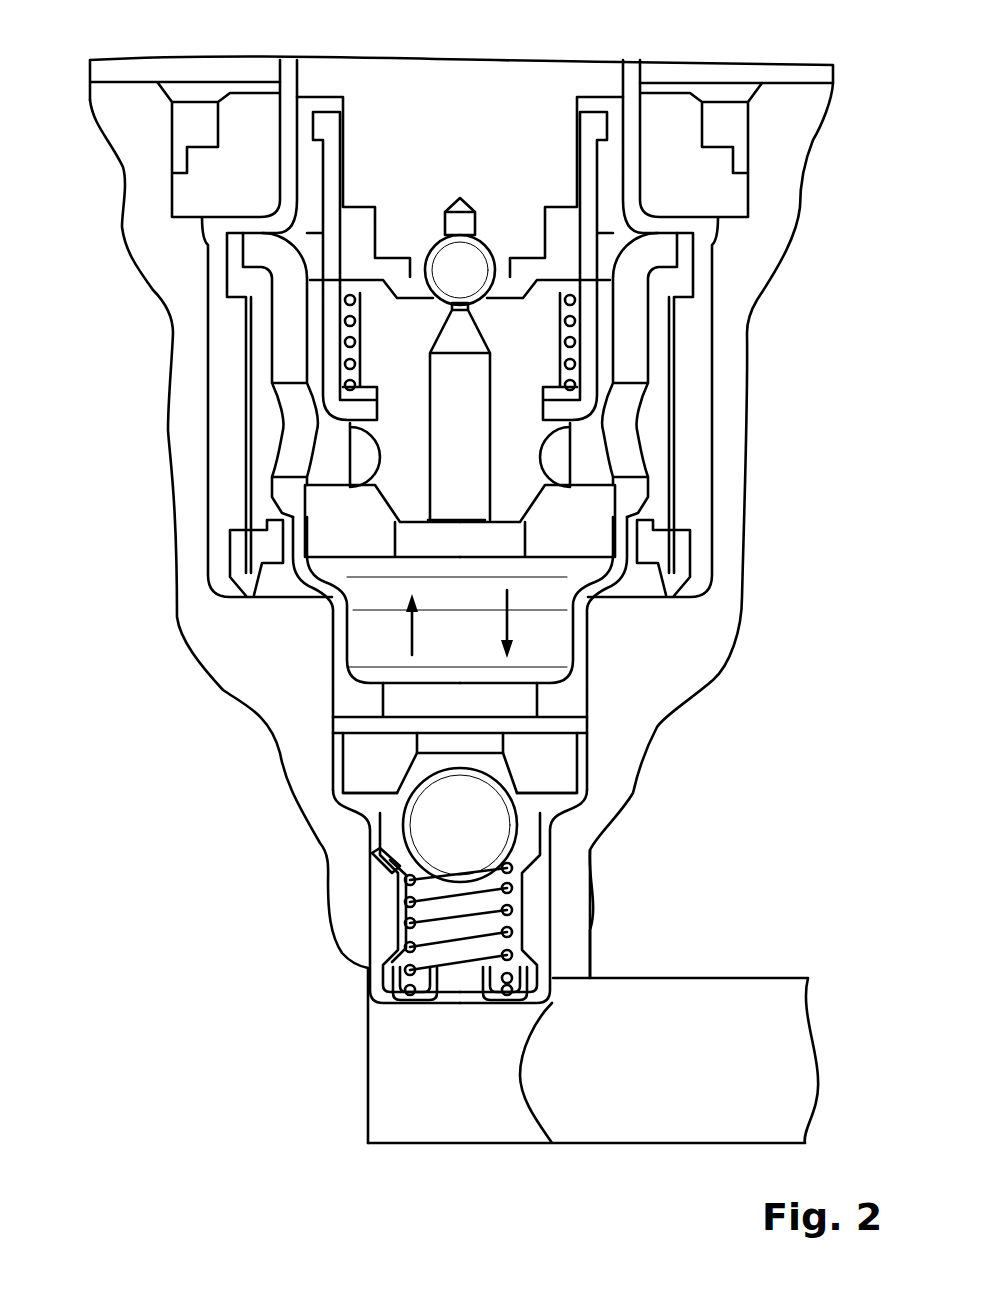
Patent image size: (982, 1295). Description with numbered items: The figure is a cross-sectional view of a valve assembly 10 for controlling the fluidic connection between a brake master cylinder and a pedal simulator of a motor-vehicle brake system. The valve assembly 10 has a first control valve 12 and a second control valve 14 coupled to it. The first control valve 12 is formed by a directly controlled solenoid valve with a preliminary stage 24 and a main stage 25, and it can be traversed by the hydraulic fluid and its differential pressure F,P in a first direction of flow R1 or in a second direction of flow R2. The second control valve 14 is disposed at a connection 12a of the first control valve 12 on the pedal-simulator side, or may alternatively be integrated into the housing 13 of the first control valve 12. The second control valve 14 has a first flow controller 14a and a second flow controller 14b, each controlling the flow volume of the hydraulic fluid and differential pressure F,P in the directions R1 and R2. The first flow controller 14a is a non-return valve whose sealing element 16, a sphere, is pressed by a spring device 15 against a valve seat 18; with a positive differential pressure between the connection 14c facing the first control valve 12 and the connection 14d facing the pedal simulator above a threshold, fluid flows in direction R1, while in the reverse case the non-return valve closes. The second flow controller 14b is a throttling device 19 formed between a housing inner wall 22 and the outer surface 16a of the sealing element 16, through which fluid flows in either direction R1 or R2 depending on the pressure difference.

The valve assembly 10 is at (148, 360).
The first control valve 12 is at (767, 367).
The connection 12a is at (620, 737).
The housing 13 is at (577, 677).
The second control valve 14 is at (642, 868).
The first flow controller 14a is at (382, 915).
The second flow controller 14b is at (395, 790).
The connection 14c is at (457, 753).
The connection 14d is at (460, 1010).
The spring device 15 is at (512, 930).
The sealing element 16 is at (510, 820).
The outer surface 16a is at (553, 783).
The valve seat 18 is at (353, 763).
The throttling device 19 is at (382, 857).
The housing inner wall 22 is at (553, 900).
The preliminary stage 24 is at (514, 250).
The main stage 25 is at (583, 447).
The first direction of flow R1 is at (526, 624).
The second direction of flow R2 is at (397, 624).
The hydraulic fluid and differential pressure F,P is at (553, 627).